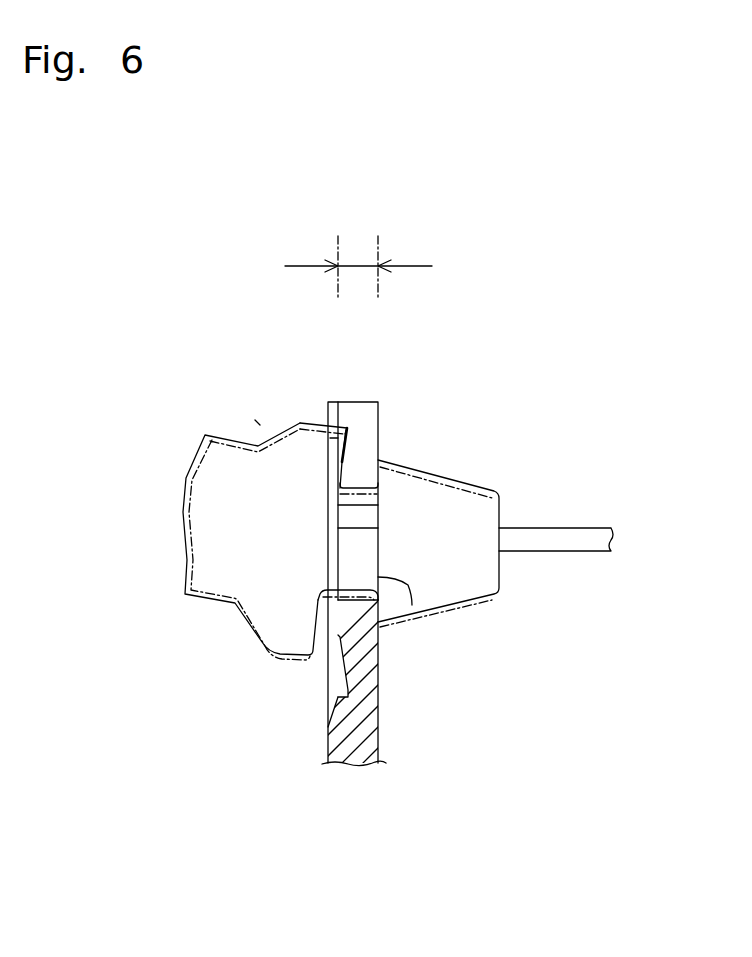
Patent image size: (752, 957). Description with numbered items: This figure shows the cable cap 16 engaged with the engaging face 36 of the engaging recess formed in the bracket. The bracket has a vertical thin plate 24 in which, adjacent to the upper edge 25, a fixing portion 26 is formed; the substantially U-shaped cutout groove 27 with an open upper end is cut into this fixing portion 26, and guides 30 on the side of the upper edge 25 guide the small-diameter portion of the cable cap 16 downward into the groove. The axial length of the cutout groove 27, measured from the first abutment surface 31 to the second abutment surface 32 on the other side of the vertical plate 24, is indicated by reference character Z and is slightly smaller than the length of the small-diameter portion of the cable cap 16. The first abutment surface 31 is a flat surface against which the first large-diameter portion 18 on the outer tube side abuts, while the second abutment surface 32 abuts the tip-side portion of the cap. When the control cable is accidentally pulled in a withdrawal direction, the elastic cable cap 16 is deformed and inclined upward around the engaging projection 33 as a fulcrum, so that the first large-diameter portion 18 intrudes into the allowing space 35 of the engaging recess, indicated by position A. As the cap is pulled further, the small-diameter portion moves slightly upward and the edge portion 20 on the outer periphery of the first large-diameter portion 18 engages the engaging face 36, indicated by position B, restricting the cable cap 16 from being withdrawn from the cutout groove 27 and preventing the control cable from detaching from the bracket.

The cable cap 16 is at (232, 440).
The first large-diameter portion on the outer tube side 18 is at (318, 428).
The edge portion 20 is at (340, 428).
The vertical thin plate 24 is at (383, 723).
The upper edge 25 is at (365, 402).
The fixing portion 26 is at (333, 704).
The cutout groove 27 is at (412, 605).
The guides 30 is at (371, 420).
The first abutment surface 31 is at (338, 610).
The second abutment surface 32 is at (380, 684).
The engaging projection 33 is at (372, 517).
The allowing space 35 is at (348, 460).
The engaging face 36 is at (345, 427).
The position A is at (490, 600).
The position B is at (490, 486).
The axial length of the cutout groove Z is at (358, 264).